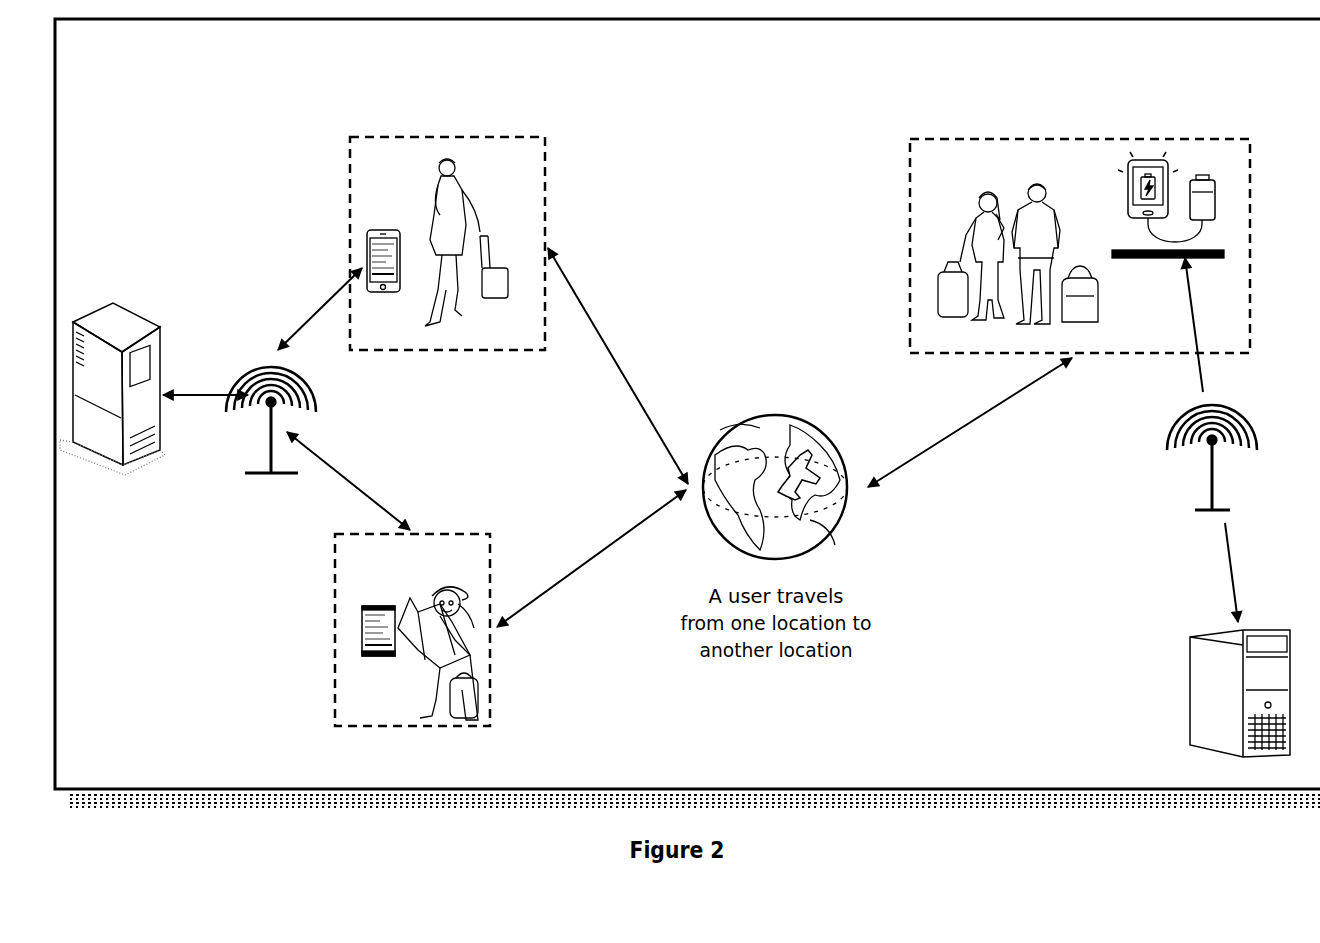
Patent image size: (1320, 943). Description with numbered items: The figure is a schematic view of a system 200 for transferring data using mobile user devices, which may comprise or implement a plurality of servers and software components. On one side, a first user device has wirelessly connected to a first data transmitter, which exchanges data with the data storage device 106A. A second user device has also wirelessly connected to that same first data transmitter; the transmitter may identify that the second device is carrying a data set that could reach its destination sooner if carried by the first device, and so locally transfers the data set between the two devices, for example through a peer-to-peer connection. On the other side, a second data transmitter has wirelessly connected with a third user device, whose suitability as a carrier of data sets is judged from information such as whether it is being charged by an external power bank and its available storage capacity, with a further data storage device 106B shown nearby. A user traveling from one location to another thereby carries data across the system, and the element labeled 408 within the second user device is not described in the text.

The system 200 is at (196, 64).
The data storage device 106A is at (134, 417).
The data storage device 106B is at (1173, 693).
The mobile device display 408 is at (379, 615).